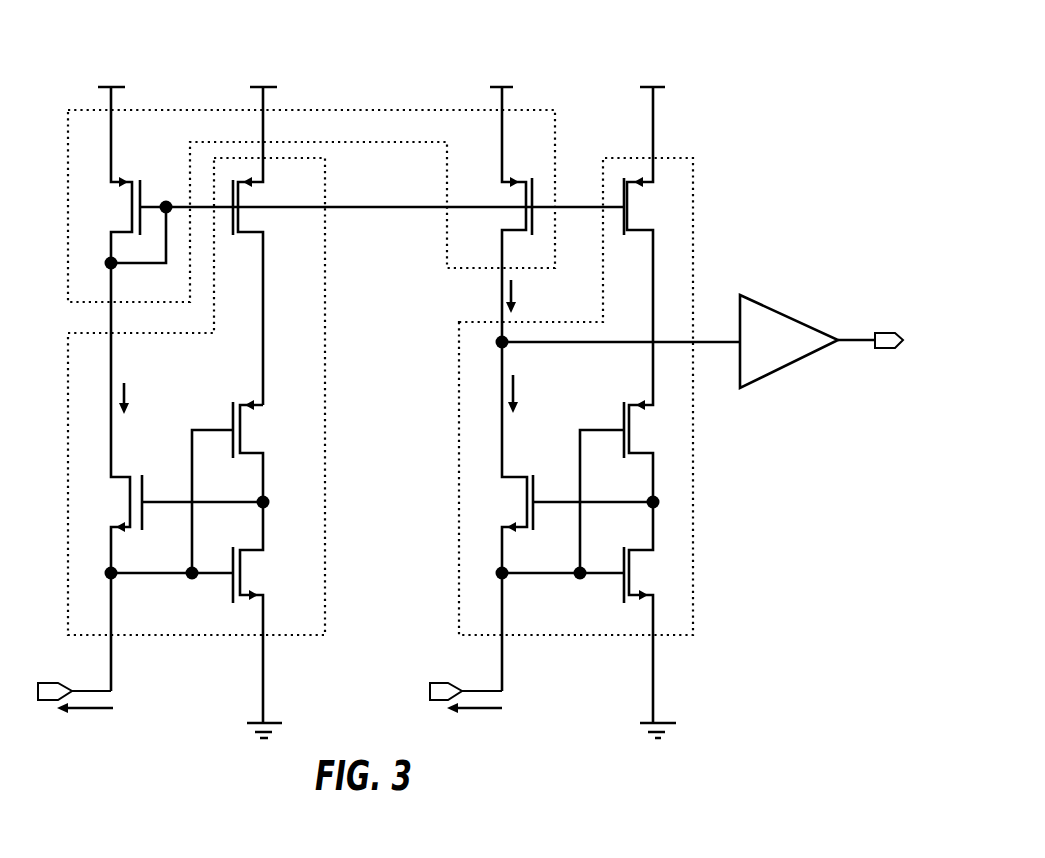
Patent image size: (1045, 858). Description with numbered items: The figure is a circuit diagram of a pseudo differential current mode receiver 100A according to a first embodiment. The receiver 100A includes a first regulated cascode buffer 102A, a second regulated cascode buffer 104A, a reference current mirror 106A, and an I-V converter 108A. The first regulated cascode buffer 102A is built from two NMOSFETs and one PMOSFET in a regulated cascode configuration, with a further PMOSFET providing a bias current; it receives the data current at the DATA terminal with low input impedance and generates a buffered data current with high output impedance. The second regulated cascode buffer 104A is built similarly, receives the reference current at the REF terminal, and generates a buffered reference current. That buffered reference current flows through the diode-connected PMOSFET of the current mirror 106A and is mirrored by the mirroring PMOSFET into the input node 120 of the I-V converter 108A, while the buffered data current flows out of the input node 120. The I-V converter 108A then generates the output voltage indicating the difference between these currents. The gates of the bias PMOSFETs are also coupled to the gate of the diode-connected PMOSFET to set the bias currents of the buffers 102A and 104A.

The pseudo differential current mode receiver 100A is at (492, 401).
The first regulated cascode buffer 102A is at (454, 498).
The second regulated cascode buffer 104A is at (330, 470).
The reference current mirror 106A is at (356, 106).
The I-V converter 108A is at (783, 306).
The input node 120 is at (511, 348).